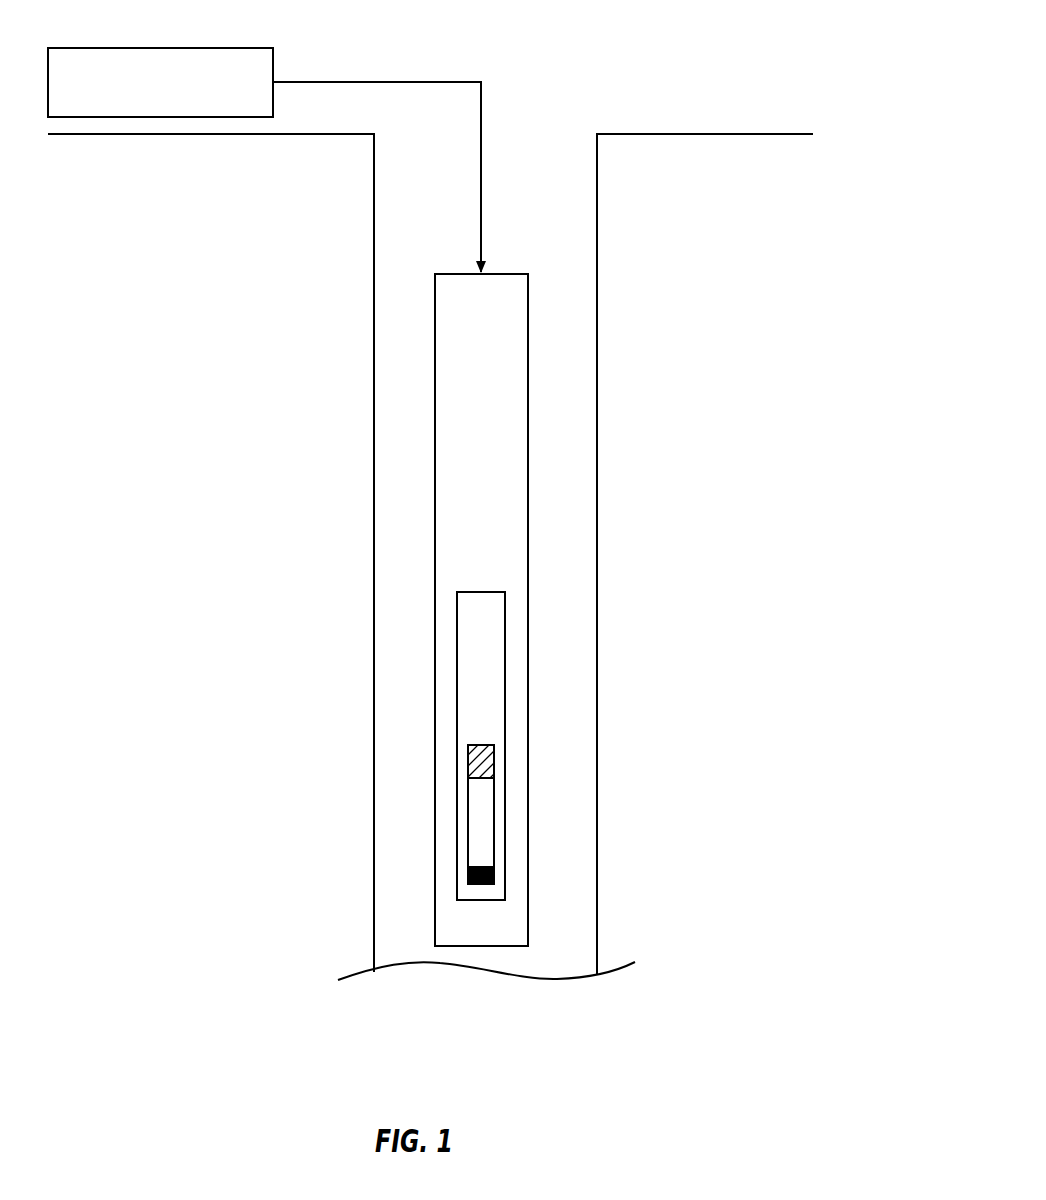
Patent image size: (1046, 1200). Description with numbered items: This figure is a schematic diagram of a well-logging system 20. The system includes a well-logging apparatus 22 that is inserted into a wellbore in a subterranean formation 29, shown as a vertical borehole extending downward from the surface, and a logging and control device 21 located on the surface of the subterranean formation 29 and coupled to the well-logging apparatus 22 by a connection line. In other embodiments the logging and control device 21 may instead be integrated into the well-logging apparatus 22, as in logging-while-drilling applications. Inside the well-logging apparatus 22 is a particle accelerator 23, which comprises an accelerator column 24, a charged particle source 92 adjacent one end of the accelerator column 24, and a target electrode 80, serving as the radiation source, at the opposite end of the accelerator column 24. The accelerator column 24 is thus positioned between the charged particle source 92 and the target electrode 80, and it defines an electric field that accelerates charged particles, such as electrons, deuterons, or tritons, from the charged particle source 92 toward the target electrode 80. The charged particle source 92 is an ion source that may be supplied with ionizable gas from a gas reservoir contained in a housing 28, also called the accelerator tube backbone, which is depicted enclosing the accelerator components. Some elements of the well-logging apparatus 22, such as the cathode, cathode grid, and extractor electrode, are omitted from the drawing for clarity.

The well-logging system 20 is at (598, 58).
The logging and control device 21 is at (235, 57).
The well-logging apparatus 22 is at (528, 352).
The particle accelerator 23 is at (457, 638).
The accelerator column 24 is at (490, 820).
The housing 28 is at (467, 851).
The subterranean formation 29 is at (700, 142).
The target electrode 80 is at (493, 877).
The charged particle source 92 is at (493, 762).